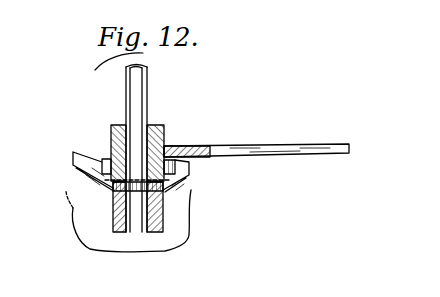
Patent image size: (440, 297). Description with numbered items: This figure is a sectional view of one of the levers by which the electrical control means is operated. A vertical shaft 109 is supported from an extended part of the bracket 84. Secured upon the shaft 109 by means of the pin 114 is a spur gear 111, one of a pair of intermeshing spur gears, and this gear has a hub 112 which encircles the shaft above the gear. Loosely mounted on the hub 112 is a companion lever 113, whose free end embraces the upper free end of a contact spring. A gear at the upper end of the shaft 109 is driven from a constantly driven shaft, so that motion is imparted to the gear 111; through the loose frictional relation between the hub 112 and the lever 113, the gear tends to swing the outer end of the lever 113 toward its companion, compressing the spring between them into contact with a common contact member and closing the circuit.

The bracket 84 is at (128, 221).
The shaft 109 is at (148, 88).
The spur gear 111 is at (101, 160).
The hub 112 is at (149, 124).
The companion lever 113 is at (293, 144).
The pin 114 is at (111, 183).